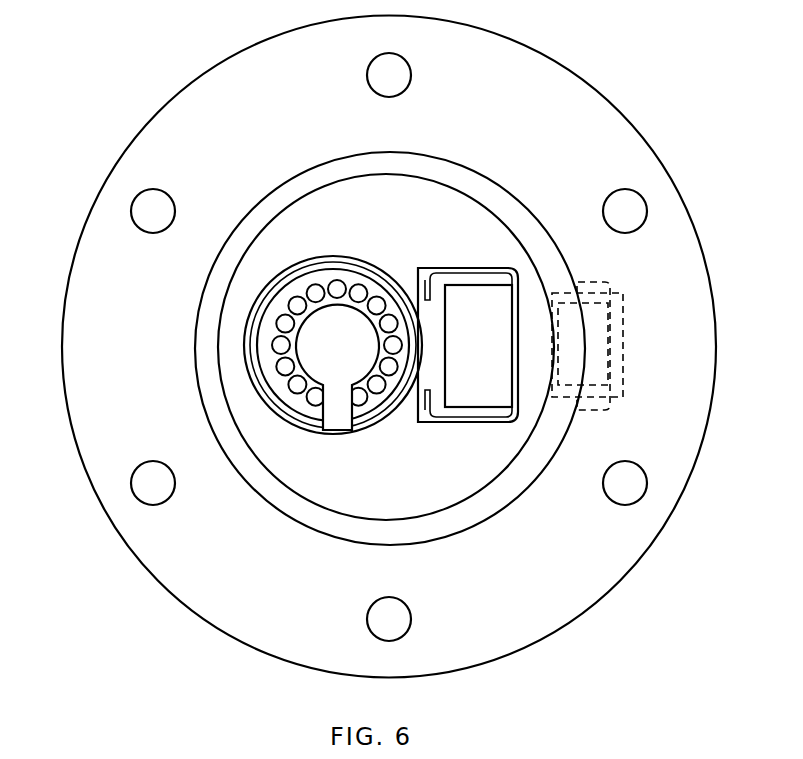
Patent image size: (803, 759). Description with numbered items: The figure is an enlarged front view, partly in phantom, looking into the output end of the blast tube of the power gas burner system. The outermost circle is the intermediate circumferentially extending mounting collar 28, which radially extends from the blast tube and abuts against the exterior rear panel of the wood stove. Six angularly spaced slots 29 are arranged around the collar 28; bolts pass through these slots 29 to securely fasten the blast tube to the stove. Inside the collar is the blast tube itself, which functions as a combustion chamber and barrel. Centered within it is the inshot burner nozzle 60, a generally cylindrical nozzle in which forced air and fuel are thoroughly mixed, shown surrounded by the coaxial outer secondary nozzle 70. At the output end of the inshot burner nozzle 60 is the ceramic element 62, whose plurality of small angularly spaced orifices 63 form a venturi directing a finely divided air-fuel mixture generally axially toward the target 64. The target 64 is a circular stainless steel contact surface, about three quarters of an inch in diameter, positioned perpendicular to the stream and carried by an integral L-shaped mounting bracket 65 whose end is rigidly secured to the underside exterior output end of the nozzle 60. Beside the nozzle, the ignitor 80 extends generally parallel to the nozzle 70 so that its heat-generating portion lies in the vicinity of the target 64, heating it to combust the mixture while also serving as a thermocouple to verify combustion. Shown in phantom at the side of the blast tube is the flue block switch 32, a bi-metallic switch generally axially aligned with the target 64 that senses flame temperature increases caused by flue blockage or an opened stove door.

The mounting collar 28 is at (222, 62).
The slots 29 is at (398, 72).
The flue block switch 32 is at (625, 320).
The inshot burner nozzle 60 is at (350, 267).
The ceramic element 62 is at (329, 349).
The orifices 63 is at (336, 288).
The target 64 is at (340, 363).
The mounting bracket 65 is at (321, 395).
The outer secondary nozzle 70 is at (315, 432).
The ignitor 80 is at (473, 423).